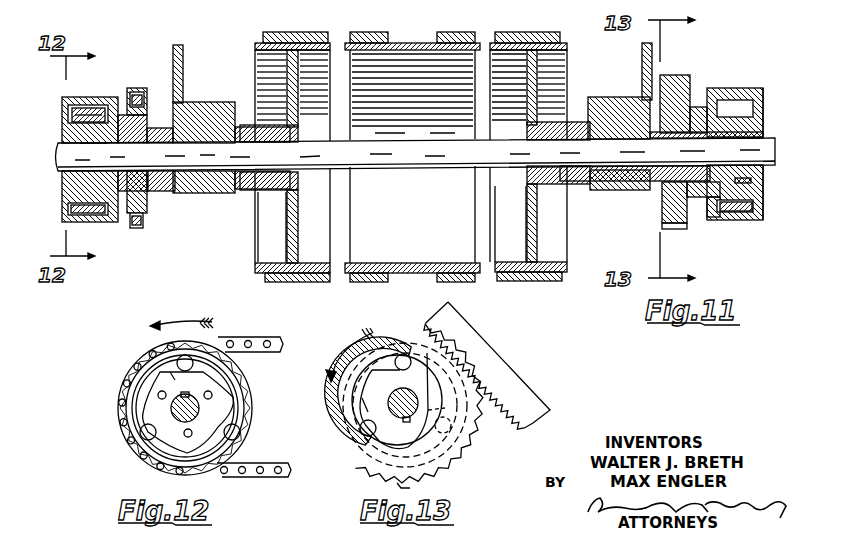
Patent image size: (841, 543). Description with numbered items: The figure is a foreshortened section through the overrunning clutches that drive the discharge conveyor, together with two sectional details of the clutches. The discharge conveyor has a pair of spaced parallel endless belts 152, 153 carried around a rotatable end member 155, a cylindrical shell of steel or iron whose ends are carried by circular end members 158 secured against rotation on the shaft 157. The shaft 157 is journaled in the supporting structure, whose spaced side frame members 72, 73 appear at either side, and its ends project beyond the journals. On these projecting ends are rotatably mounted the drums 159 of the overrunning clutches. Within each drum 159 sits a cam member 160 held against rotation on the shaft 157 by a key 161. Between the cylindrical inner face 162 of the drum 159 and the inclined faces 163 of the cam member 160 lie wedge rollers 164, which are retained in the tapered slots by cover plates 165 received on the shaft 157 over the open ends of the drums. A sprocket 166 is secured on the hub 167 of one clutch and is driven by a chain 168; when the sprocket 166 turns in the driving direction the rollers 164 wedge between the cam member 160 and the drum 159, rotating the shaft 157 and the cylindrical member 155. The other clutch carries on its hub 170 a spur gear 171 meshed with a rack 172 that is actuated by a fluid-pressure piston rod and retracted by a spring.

In FIG. 11, the side frame member 72 is at (185, 78).
In FIG. 11, the side frame member 73 is at (642, 64).
In FIG. 11, the endless belt 152 is at (520, 33).
In FIG. 11, the endless belt 153 is at (298, 33).
In FIG. 11, the rotatable end member 155 is at (320, 282).
In FIG. 11, the shaft 157 is at (416, 154).
In FIG. 12, the shaft 157 is at (171, 408).
In FIG. 13, the shaft 157 is at (392, 398).
In FIG. 11, the circular end member 158 is at (262, 235).
In FIG. 11, the drum 159 is at (92, 90).
In FIG. 12, the drum 159 is at (245, 380).
In FIG. 13, the drum 159 is at (388, 340).
In FIG. 11, the cam member 160 is at (752, 130).
In FIG. 12, the cam member 160 is at (222, 384).
In FIG. 13, the cam member 160 is at (452, 470).
In FIG. 11, the key 161 is at (88, 142).
In FIG. 12, the key 161 is at (198, 381).
In FIG. 13, the key 161 is at (355, 418).
In FIG. 11, the cylindrical inner face 162 is at (738, 220).
In FIG. 12, the cylindrical inner face 162 is at (238, 402).
In FIG. 13, the cylindrical inner face 162 is at (362, 396).
In FIG. 12, the inclined face 163 is at (240, 414).
In FIG. 13, the inclined face 163 is at (452, 418).
In FIG. 11, the wedge roller 164 is at (72, 112).
In FIG. 12, the wedge roller 164 is at (140, 436).
In FIG. 13, the wedge roller 164 is at (360, 450).
In FIG. 11, the cover plate 165 is at (62, 205).
In FIG. 11, the sprocket 166 is at (148, 108).
In FIG. 12, the sprocket 166 is at (242, 348).
In FIG. 11, the hub 167 is at (152, 190).
In FIG. 11, the chain 168 is at (147, 228).
In FIG. 12, the chain 168 is at (275, 474).
In FIG. 11, the hub 170 is at (662, 190).
In FIG. 11, the spur gear 171 is at (688, 228).
In FIG. 13, the spur gear 171 is at (415, 484).
In FIG. 13, the rack 172 is at (498, 352).